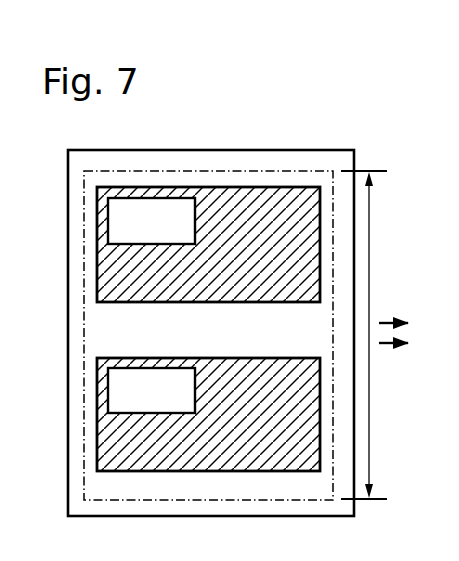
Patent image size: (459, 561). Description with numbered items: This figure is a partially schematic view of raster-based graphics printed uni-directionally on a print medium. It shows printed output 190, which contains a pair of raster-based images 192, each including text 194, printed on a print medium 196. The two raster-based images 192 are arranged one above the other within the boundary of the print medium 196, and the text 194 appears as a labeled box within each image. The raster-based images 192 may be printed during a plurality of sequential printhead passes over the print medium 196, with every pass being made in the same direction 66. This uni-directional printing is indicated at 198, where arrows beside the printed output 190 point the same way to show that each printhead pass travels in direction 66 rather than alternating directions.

The printed output 190 is at (50, 196).
The raster-based images 192 is at (95, 278).
The text 194 is at (155, 218).
The print medium 196 is at (77, 492).
The direction 66 is at (392, 346).
The uni-directional printing indication 198 is at (392, 364).